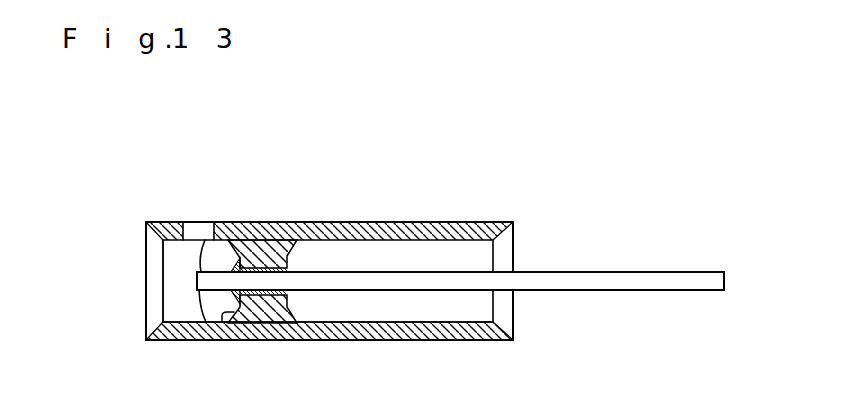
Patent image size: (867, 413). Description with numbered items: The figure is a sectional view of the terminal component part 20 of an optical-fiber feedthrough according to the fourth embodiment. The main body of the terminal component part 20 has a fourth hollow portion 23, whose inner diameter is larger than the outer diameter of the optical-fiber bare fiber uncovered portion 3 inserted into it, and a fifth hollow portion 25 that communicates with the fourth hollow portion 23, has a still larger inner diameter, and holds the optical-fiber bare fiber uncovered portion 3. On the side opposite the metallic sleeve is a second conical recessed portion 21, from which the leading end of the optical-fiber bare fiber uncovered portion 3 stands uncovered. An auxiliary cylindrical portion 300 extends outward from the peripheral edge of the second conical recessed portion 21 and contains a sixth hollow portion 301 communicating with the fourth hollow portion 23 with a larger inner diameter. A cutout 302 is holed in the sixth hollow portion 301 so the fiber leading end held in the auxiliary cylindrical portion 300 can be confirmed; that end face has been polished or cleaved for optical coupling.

The auxiliary cylindrical portion 300 is at (158, 220).
The cutout 302 is at (199, 230).
The terminal component part 20 is at (442, 220).
The sixth hollow portion 301 is at (178, 302).
The optical-fiber bare fiber uncovered portion 3 is at (203, 300).
The second conical recessed portion 21 is at (229, 336).
The fourth hollow portion 23 is at (268, 330).
The fifth hollow portion 25 is at (420, 312).